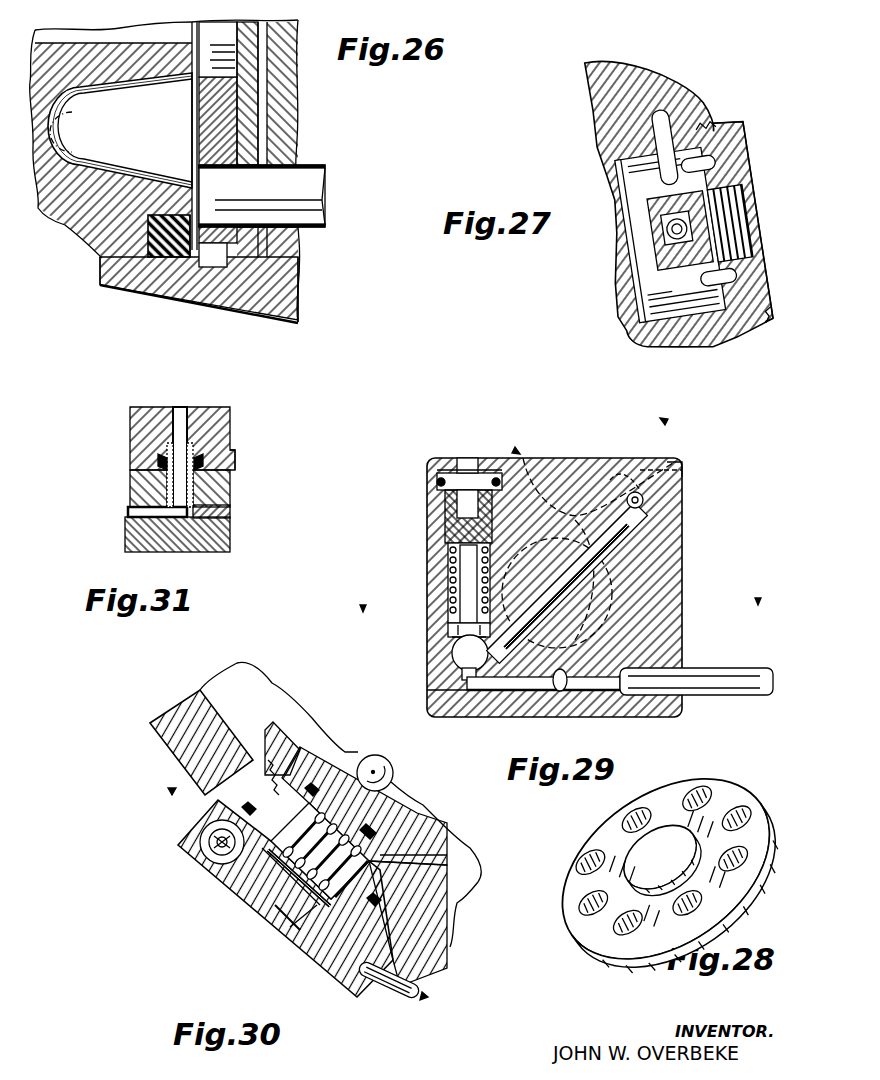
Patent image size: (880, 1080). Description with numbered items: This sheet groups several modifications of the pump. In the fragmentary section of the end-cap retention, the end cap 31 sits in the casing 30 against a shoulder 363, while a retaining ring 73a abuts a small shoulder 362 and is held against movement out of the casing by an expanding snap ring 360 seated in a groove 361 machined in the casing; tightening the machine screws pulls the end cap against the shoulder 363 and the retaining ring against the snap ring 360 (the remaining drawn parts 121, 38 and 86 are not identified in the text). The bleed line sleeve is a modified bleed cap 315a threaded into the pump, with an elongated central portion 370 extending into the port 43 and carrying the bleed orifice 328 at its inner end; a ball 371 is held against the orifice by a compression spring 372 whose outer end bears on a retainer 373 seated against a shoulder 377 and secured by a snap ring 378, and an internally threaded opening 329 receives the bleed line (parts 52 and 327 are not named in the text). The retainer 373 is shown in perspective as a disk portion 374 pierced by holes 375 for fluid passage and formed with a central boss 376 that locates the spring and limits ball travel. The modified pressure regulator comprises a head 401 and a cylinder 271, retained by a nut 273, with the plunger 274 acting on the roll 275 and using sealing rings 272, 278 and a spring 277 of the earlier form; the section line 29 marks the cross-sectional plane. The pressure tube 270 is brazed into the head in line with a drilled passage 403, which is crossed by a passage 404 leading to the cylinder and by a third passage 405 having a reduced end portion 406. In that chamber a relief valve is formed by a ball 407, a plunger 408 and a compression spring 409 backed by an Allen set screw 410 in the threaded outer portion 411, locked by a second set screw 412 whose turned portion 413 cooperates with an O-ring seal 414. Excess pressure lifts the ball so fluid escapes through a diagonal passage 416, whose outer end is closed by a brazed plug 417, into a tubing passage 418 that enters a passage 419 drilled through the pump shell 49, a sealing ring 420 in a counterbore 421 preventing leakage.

In FIG. 26, the spring clip 121 is at (95, 158).
In FIG. 26, the end cap 31 is at (97, 246).
In FIG. 29, the end cap 31 is at (660, 418).
In FIG. 26, the retaining ring 73a is at (253, 125).
In FIG. 26, the tube 38 is at (326, 174).
In FIG. 26, the casing 30 is at (258, 316).
In FIG. 29, the casing 30 is at (758, 605).
In FIG. 26, the base plate 86 is at (199, 300).
In FIG. 26, the snap ring 360 is at (223, 266).
In FIG. 26, the groove 361 is at (228, 250).
In FIG. 26, the shoulder 362 is at (301, 312).
In FIG. 26, the shoulder 363 is at (110, 287).
In FIG. 27, the valve body 52 is at (665, 118).
In FIG. 27, the retainer 373 is at (706, 140).
In FIG. 27, the bleed line cap 315a is at (743, 133).
In FIG. 27, the elongated central portion 370 is at (668, 212).
In FIG. 27, the ball 371 is at (664, 227).
In FIG. 27, the bleed orifice 328 is at (653, 237).
In FIG. 27, the internally threaded opening 329 is at (750, 230).
In FIG. 27, the compression spring 372 is at (617, 309).
In FIG. 27, the lip 327 is at (747, 322).
In FIG. 27, the shoulder 377 is at (668, 298).
In FIG. 27, the snap ring 378 is at (683, 295).
In FIG. 27, the port 43 is at (658, 300).
In FIG. 31, the passage 419 is at (184, 410).
In FIG. 31, the counterbore 421 is at (163, 460).
In FIG. 29, the counterbore 421 is at (620, 470).
In FIG. 31, the shell 49 is at (232, 424).
In FIG. 30, the shell 49 is at (165, 712).
In FIG. 31, the sealing ring 420 is at (237, 454).
In FIG. 31, the passage 418 is at (195, 484).
In FIG. 29, the passage 418 is at (653, 503).
In FIG. 31, the plug 417 is at (232, 509).
In FIG. 29, the plug 417 is at (683, 470).
In FIG. 31, the diagonal passage 416 is at (128, 513).
In FIG. 29, the diagonal passage 416 is at (567, 517).
In FIG. 30, the diagonal passage 416 is at (268, 917).
In FIG. 31, the head 401 is at (213, 553).
In FIG. 29, the head 401 is at (685, 608).
In FIG. 30, the head 401 is at (190, 860).
In FIG. 29, the second Allen set screw 412 is at (452, 465).
In FIG. 29, the turned portion 413 is at (436, 462).
In FIG. 29, the O-ring seal 414 is at (438, 483).
In FIG. 29, the threaded outer portion 411 is at (434, 508).
In FIG. 29, the Allen set screw 410 is at (447, 527).
In FIG. 29, the compression spring 409 is at (458, 572).
In FIG. 30, the compression spring 409 is at (220, 853).
In FIG. 29, the plunger 408 is at (453, 610).
In FIG. 30, the plunger 408 is at (220, 842).
In FIG. 29, the third passage 405 is at (455, 630).
In FIG. 30, the third passage 405 is at (212, 837).
In FIG. 29, the ball 407 is at (460, 657).
In FIG. 29, the reduced end portion 406 is at (463, 683).
In FIG. 29, the drilled passage 403 is at (533, 692).
In FIG. 29, the passage 404 is at (603, 716).
In FIG. 29, the cylinder 271 is at (688, 545).
In FIG. 30, the cylinder 271 is at (290, 927).
In FIG. 29, the pressure tube 270 is at (728, 667).
In FIG. 30, the pressure tube 270 is at (400, 990).
In FIG. 30, the nut 273 is at (280, 730).
In FIG. 30, the sealing ring 272 is at (413, 820).
In FIG. 30, the plunger 274 is at (393, 794).
In FIG. 30, the roll 275 is at (393, 765).
In FIG. 30, the spring 277 is at (320, 905).
In FIG. 30, the sealing ring 278 is at (373, 907).
In FIG. 30, the section line 29— 29 is at (420, 1000).
In FIG. 28, the disk portion 374 is at (732, 790).
In FIG. 28, the holes 375 is at (683, 800).
In FIG. 28, the central boss 376 is at (647, 863).